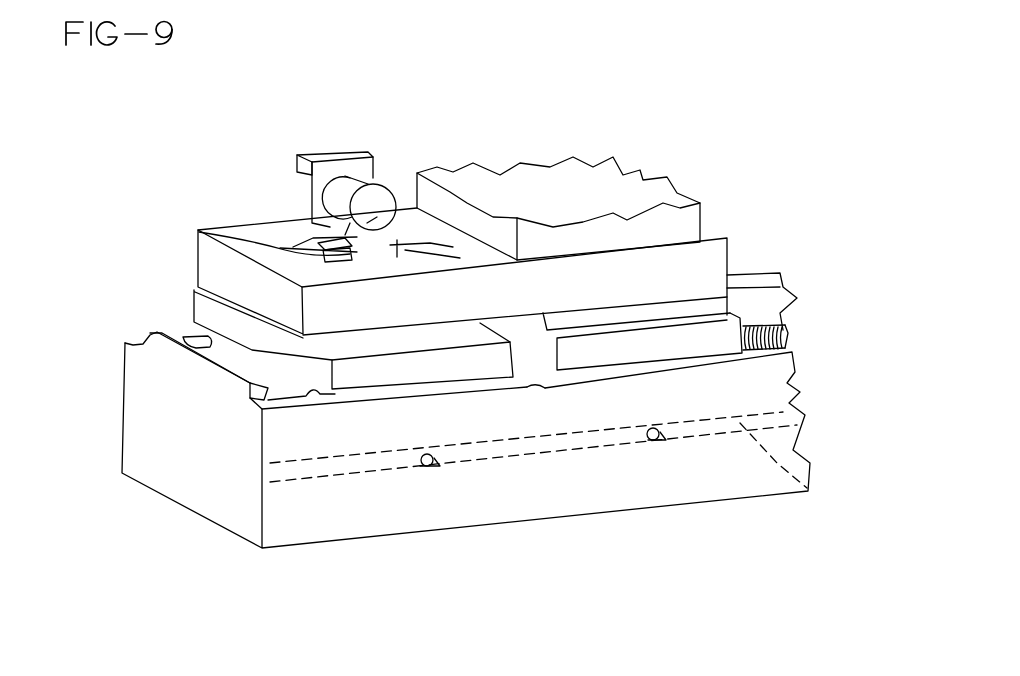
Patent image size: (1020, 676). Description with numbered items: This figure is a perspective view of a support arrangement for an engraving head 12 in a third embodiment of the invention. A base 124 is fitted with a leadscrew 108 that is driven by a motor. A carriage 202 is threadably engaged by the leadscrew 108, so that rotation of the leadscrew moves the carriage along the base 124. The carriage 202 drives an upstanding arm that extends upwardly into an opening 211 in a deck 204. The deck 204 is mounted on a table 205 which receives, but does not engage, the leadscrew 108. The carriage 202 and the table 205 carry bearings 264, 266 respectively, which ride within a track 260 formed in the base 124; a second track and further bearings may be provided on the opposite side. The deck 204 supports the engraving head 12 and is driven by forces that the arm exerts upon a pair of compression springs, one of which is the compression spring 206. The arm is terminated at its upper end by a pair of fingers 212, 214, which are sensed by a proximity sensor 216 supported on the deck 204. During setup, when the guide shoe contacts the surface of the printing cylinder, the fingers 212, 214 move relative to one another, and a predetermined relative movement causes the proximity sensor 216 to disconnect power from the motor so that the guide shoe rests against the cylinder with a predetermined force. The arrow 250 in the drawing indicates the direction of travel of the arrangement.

The engraving head 12 is at (537, 188).
The leadscrew 108 is at (788, 333).
The base 124 is at (177, 467).
The carriage 202 is at (197, 324).
The deck 204 is at (728, 262).
The table 205 is at (703, 342).
The compression spring 206 is at (243, 230).
The opening 211 is at (322, 230).
The finger 212 is at (365, 268).
The finger 214 is at (433, 248).
The proximity sensor 216 is at (368, 143).
The direction arrow 250 is at (110, 315).
The track 260 is at (810, 496).
The bearing 264 is at (447, 467).
The bearing 266 is at (667, 440).